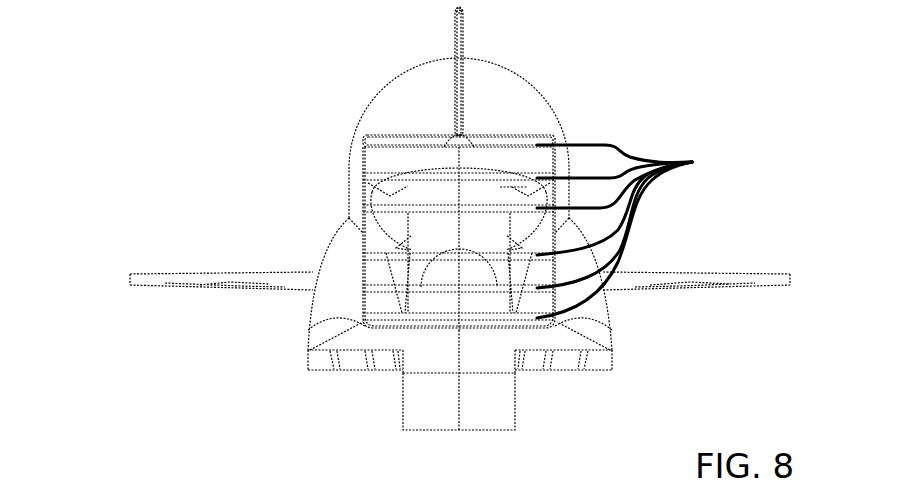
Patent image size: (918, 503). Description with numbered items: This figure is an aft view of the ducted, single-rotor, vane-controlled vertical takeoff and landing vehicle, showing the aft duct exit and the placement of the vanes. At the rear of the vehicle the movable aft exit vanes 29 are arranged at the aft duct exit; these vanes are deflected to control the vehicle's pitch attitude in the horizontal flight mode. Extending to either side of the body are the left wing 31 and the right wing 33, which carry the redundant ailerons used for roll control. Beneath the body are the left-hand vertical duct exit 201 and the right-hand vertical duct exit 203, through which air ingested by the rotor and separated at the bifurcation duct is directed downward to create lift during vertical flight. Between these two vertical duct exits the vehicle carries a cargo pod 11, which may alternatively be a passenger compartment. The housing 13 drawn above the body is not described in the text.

The dome housing 13 is at (497, 90).
The aft exit vanes 29 is at (692, 162).
The left wing 31 is at (130, 279).
The right wing 33 is at (785, 281).
The left-hand vertical duct exit 201 is at (302, 391).
The right-hand vertical duct exit 203 is at (601, 390).
The cargo pod 11 is at (423, 408).